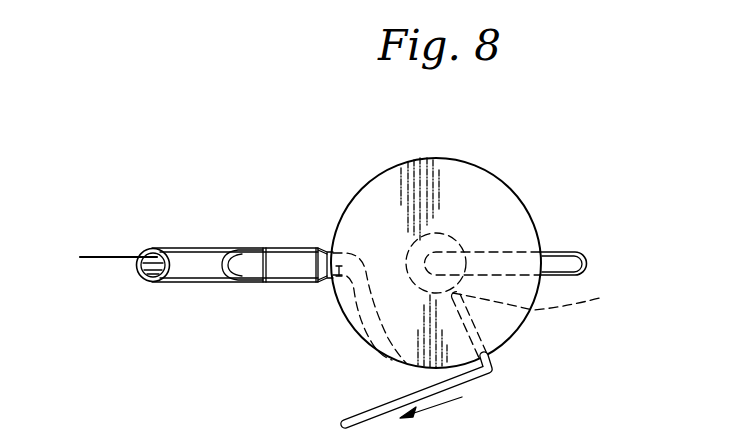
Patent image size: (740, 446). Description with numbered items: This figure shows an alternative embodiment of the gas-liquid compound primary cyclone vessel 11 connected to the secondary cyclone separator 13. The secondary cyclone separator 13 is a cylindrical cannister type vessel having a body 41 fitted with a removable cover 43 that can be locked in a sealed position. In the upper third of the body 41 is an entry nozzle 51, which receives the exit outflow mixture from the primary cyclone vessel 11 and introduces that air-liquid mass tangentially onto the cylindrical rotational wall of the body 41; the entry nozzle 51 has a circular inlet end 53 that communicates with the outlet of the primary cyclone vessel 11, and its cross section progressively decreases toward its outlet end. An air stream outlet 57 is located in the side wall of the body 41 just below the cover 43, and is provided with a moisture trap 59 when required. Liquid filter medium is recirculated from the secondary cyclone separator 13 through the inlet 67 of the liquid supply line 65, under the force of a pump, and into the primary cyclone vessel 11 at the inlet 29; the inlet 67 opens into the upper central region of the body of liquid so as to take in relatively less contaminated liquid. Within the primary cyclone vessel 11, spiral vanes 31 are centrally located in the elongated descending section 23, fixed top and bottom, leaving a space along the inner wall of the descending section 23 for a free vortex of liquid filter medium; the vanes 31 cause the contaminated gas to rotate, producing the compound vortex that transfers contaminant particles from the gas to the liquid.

The gas-liquid compound primary cyclone vessel 11 is at (185, 288).
The secondary cyclone separator 13 is at (352, 176).
The elongated descending section 23 is at (178, 262).
The inlet 29 is at (138, 256).
The spiral vanes 31 is at (145, 279).
The body 41 is at (538, 232).
The removable cover 43 is at (481, 185).
The entry nozzle 51 is at (357, 308).
The inlet end 53 is at (328, 248).
The air stream outlet 57 is at (545, 250).
The moisture trap 59 is at (445, 243).
The liquid supply line 65 is at (486, 380).
The inlet 67 is at (543, 299).